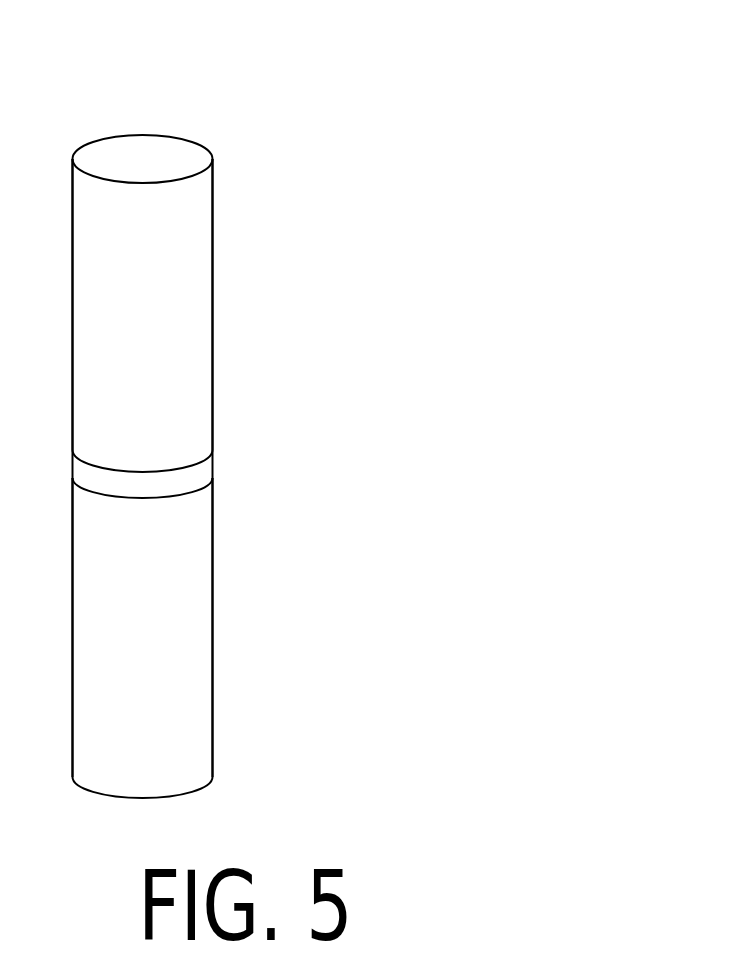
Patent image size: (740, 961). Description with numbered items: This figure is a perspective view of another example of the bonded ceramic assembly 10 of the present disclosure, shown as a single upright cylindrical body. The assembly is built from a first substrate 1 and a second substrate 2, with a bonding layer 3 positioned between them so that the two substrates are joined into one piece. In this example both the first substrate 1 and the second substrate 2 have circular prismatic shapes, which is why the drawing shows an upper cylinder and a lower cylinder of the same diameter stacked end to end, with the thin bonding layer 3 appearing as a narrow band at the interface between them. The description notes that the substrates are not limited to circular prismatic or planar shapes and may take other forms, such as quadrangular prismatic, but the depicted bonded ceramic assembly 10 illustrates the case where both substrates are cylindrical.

The bonded ceramic assembly 10 is at (184, 129).
The first substrate 1 is at (198, 323).
The second substrate 2 is at (198, 657).
The bonding layer 3 is at (198, 473).